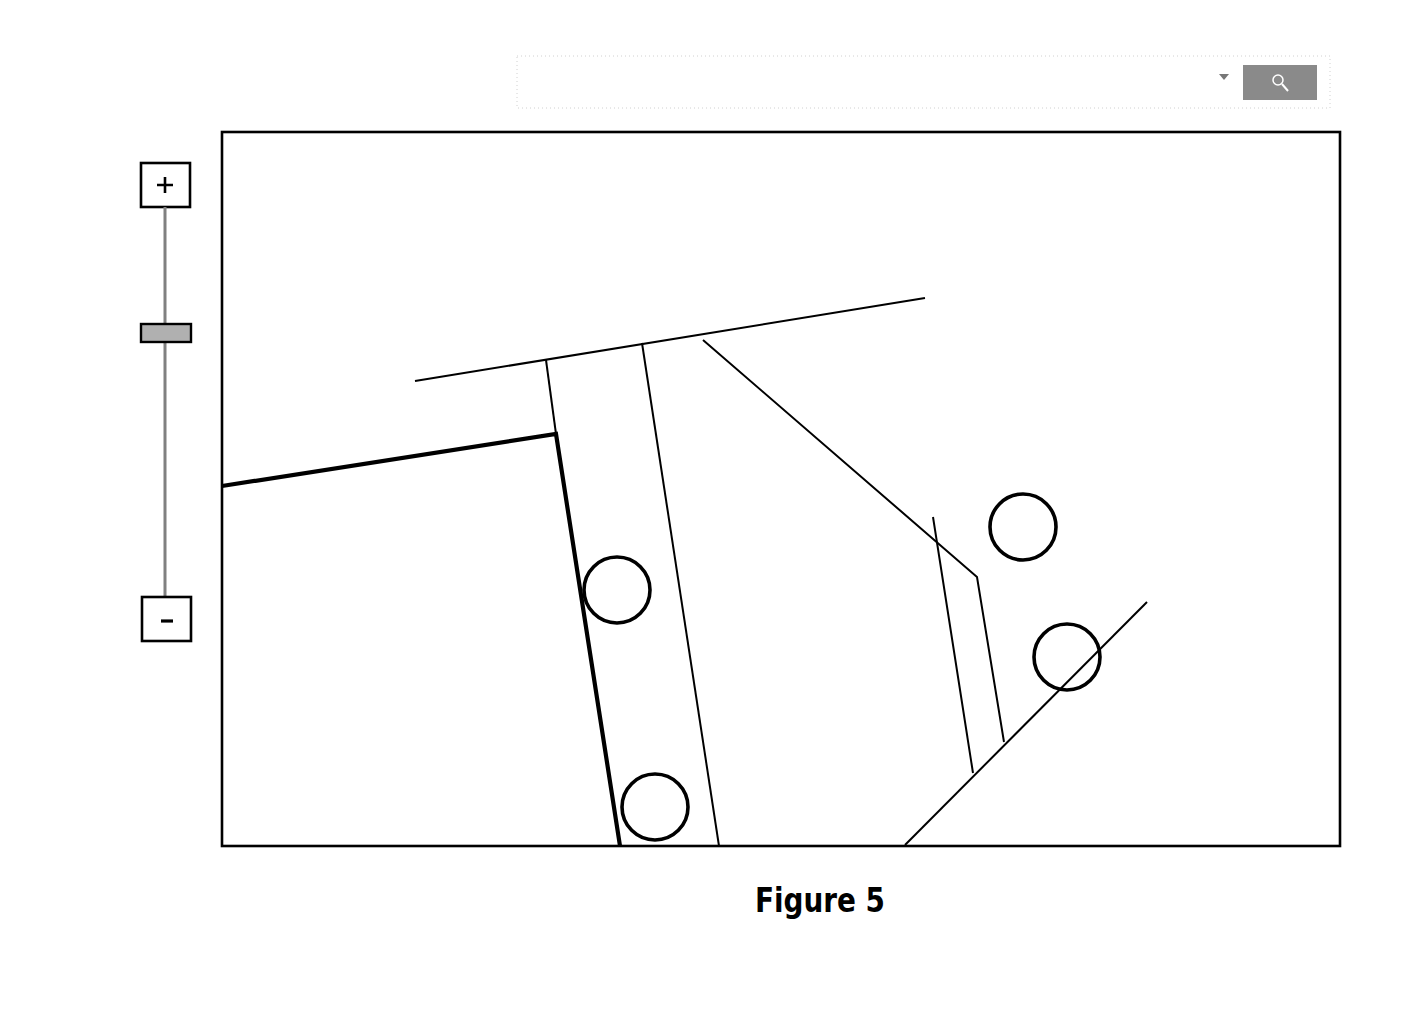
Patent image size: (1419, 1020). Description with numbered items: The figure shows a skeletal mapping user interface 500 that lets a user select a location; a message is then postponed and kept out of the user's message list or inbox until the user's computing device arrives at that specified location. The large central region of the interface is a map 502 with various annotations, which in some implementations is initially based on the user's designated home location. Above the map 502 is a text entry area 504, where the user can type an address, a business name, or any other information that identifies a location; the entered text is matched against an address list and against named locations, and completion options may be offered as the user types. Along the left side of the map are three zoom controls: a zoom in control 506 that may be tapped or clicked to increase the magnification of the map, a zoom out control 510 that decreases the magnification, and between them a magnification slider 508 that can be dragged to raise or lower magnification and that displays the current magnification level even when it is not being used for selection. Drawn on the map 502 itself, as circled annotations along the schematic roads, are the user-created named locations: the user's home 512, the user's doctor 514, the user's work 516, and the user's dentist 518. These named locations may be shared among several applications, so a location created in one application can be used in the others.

The mapping user interface 500 is at (107, 73).
The map 502 is at (255, 142).
The text entry area 504 is at (537, 82).
The zoom in control 506 is at (143, 178).
The magnification slider 508 is at (141, 333).
The zoom out control 510 is at (148, 620).
The user's home 512 is at (607, 608).
The user's doctor 514 is at (653, 833).
The user's work 516 is at (1070, 680).
The user's dentist 518 is at (1037, 542).